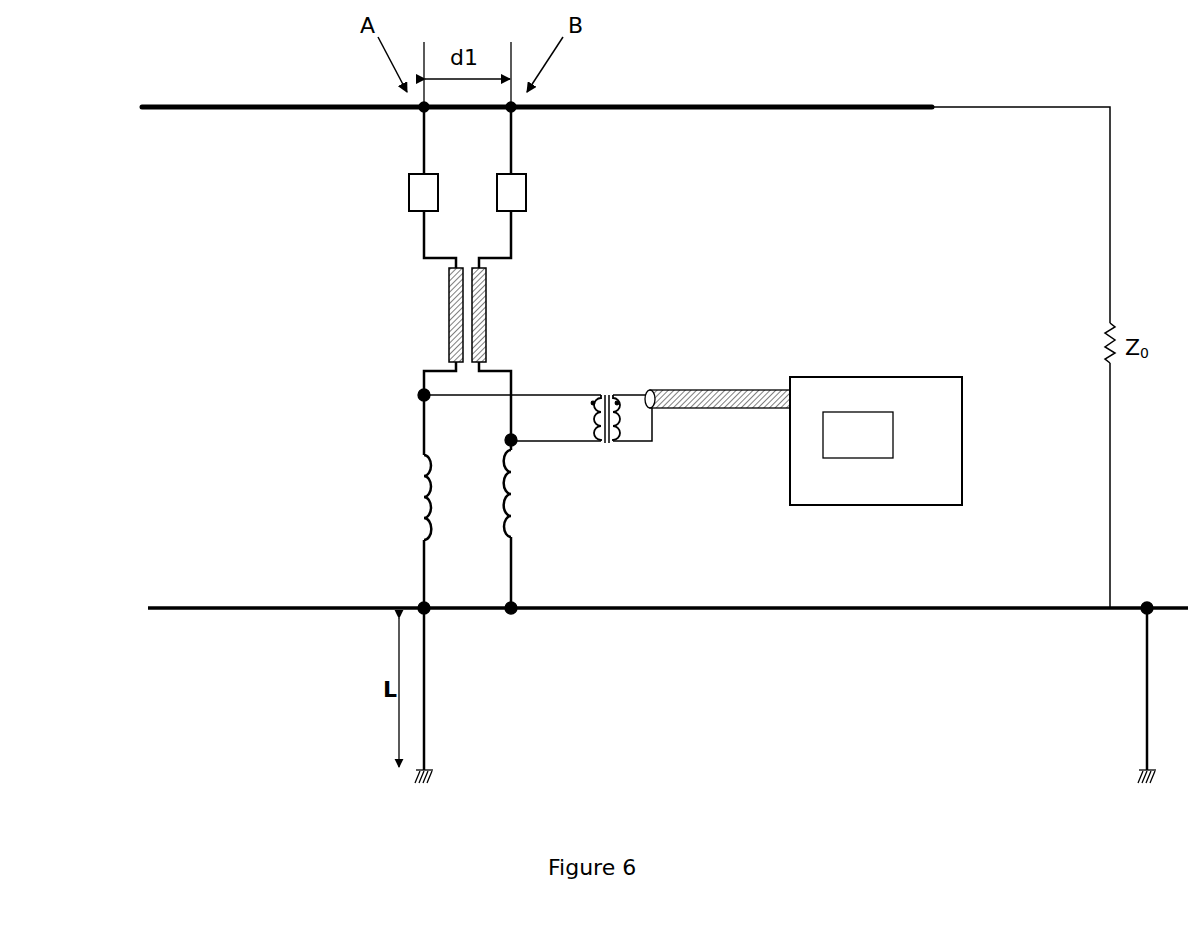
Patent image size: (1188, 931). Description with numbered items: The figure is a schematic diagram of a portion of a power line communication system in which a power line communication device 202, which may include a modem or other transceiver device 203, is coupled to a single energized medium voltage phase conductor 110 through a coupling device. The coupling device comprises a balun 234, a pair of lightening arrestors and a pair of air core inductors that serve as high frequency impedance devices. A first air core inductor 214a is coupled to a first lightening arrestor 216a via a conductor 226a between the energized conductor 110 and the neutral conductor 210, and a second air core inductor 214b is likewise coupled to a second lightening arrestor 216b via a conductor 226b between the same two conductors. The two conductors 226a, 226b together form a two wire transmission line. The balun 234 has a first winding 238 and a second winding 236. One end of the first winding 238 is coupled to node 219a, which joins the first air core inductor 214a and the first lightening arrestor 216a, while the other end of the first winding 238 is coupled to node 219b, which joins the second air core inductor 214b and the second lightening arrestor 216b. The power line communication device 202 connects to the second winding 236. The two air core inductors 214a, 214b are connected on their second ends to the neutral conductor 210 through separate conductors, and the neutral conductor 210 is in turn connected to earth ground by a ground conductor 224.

The MV phase conductor 110 is at (626, 195).
The neutral conductor 210 is at (668, 591).
The first lightening arrestor 216a is at (369, 187).
The second lightening arrestor 216b is at (567, 192).
The conductor 226a is at (405, 315).
The conductor 226b is at (530, 315).
The node 219a is at (460, 380).
The node 219b is at (559, 454).
The first winding 238 is at (571, 401).
The second winding 236 is at (704, 380).
The balun 234 is at (643, 457).
The power line communication device 202 is at (883, 424).
The modem 203 is at (809, 452).
The first air core inductor 214a is at (374, 497).
The second air core inductor 214b is at (566, 493).
The ground conductor 224 is at (472, 695).